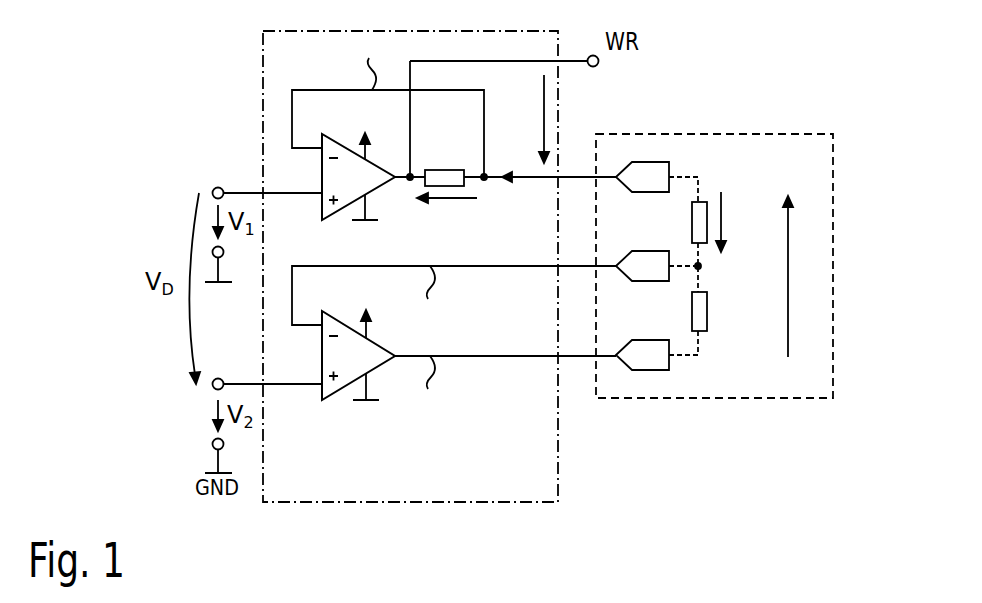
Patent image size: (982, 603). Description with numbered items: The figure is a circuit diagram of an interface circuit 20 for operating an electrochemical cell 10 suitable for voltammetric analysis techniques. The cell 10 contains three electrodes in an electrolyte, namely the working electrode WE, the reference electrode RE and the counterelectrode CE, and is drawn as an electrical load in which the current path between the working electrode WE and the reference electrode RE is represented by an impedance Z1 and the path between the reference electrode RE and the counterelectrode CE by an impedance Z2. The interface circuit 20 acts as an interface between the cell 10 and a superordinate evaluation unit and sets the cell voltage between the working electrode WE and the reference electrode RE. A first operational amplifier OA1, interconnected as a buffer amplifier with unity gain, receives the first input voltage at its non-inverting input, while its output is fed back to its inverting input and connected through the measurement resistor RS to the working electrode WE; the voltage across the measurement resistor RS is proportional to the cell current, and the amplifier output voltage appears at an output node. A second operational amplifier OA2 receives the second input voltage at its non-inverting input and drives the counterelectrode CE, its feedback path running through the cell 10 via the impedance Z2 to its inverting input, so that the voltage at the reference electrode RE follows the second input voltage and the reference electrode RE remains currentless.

The electrochemical cell 10 is at (719, 288).
The interface circuit 20 is at (439, 287).
The operational amplifier OA1 is at (366, 164).
The operational amplifier OA2 is at (366, 342).
The measurement resistor RS is at (444, 163).
The impedance Z1 is at (682, 222).
The impedance Z2 is at (682, 311).
The working electrode WE is at (642, 177).
The reference electrode RE is at (642, 266).
The counterelectrode CE is at (642, 355).